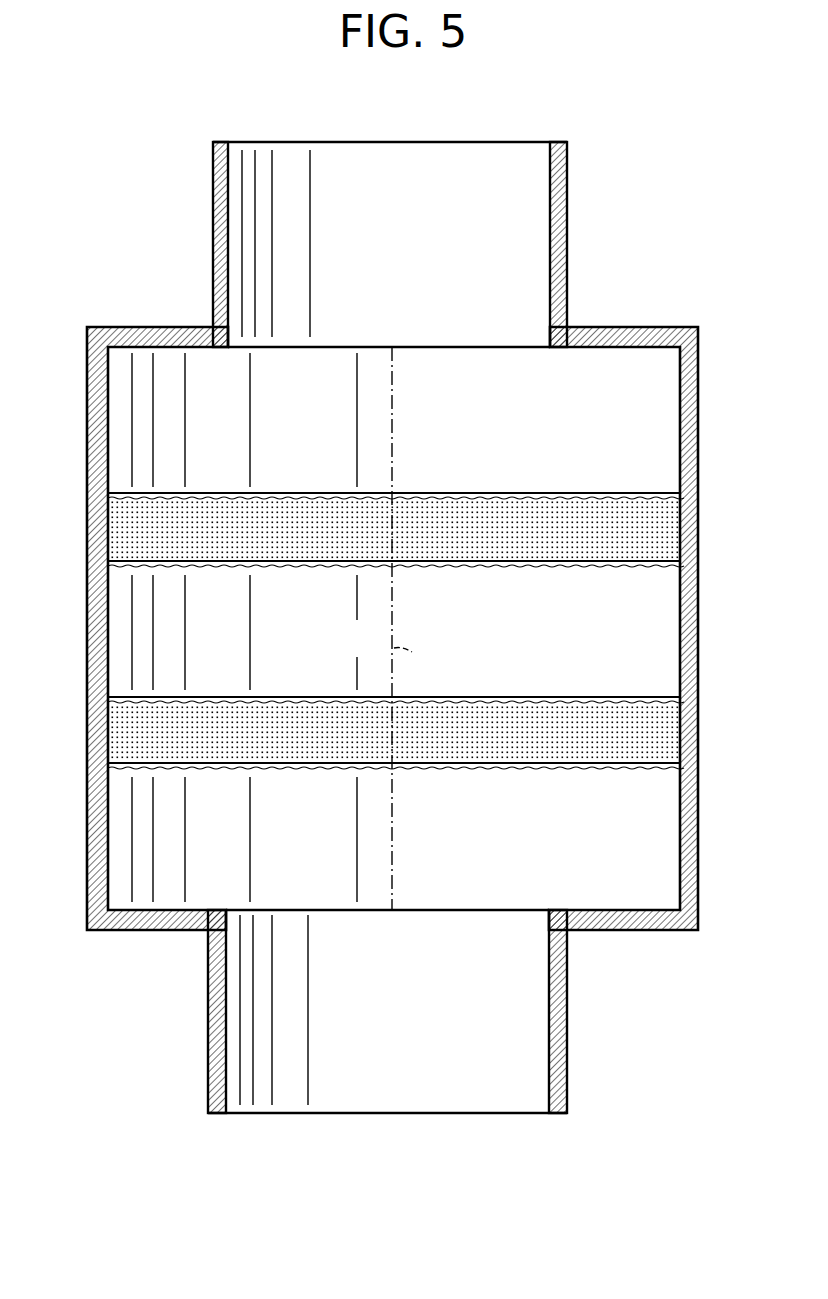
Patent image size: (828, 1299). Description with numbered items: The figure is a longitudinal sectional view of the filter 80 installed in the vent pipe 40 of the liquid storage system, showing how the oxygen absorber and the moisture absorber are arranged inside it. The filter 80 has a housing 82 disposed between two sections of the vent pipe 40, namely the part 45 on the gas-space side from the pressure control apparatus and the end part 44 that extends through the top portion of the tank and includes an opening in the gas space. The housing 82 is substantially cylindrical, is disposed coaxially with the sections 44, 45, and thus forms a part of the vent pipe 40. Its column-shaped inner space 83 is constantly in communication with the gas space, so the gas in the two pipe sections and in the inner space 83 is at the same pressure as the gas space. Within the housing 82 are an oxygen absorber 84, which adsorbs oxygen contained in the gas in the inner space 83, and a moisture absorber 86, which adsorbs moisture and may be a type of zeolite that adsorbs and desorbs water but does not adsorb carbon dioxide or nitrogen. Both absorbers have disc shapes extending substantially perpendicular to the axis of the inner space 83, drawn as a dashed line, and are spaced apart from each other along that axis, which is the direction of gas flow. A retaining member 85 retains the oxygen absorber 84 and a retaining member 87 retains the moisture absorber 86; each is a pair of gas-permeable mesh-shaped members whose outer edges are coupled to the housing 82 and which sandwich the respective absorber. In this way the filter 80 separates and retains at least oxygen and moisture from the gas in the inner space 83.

The filter 80 is at (167, 288).
The housing 82 is at (94, 637).
The vent pipe 40 is at (438, 627).
The part of the vent pipe 45 is at (569, 196).
The end part of the vent pipe 44 is at (569, 1010).
The inner space 83 is at (343, 647).
The oxygen absorber 84 is at (520, 510).
The retaining member 85 is at (612, 568).
The moisture absorber 86 is at (523, 745).
The retaining member 87 is at (613, 769).